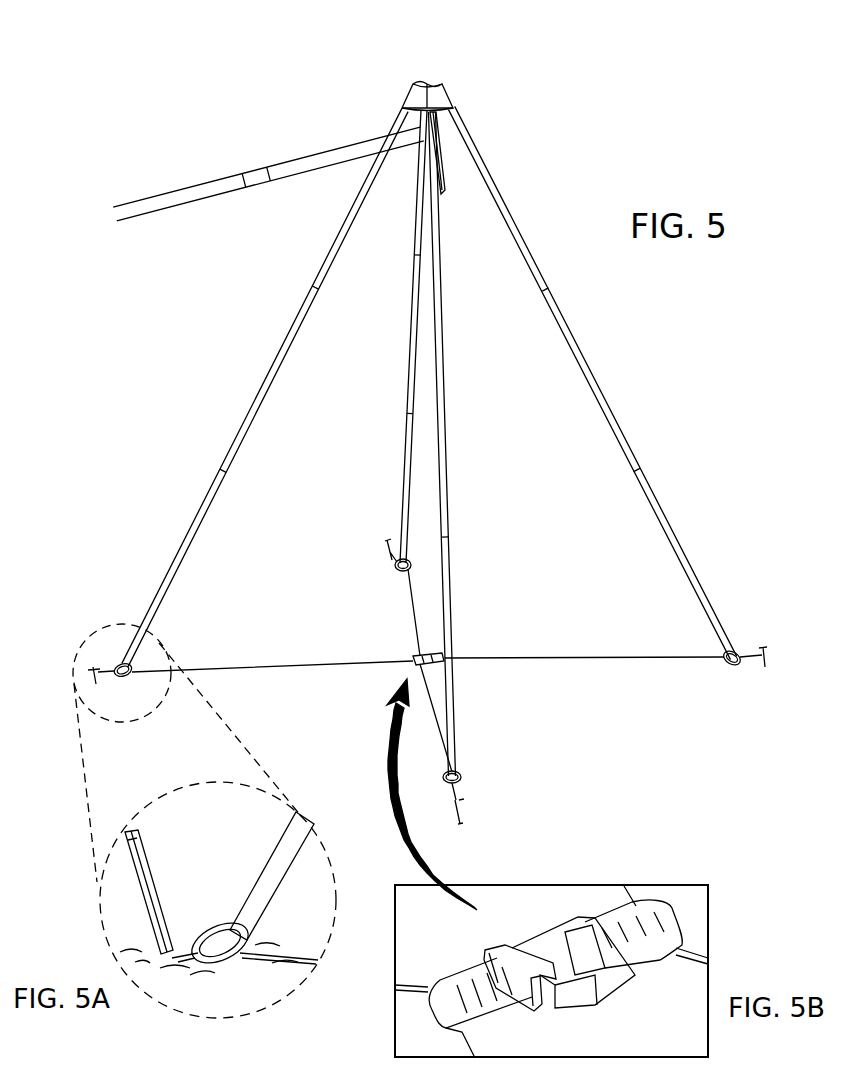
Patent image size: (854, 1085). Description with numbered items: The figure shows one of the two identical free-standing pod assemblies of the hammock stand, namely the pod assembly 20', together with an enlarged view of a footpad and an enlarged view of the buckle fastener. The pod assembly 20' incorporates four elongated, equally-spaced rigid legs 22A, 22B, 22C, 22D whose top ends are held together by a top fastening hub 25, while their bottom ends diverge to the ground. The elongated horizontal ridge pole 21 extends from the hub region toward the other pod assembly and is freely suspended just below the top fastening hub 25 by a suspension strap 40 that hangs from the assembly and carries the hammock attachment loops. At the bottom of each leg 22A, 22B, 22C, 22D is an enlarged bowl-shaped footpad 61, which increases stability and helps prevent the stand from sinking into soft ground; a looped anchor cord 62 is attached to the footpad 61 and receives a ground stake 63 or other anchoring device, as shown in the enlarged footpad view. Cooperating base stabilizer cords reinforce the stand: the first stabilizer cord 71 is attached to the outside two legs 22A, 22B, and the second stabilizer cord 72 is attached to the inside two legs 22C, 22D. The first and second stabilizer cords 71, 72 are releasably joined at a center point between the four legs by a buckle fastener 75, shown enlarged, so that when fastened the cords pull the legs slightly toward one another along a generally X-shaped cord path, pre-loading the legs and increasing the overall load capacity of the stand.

In FIG. 5, the pod assembly 20' is at (533, 80).
In FIG. 5, the ridge pole 21 is at (243, 188).
In FIG. 5, the leg 22A is at (247, 407).
In FIG. 5, the leg 22B is at (447, 462).
In FIG. 5, the leg 22C is at (410, 363).
In FIG. 5, the leg 22D is at (561, 290).
In FIG. 5, the top fastening hub 25 is at (412, 97).
In FIG. 5, the suspension strap 40 is at (443, 180).
In FIG. 5A, the footpad 61 is at (213, 914).
In FIG. 5A, the anchor cord 62 is at (182, 963).
In FIG. 5A, the ground stake 63 is at (143, 862).
In FIG. 5, the first stabilizer cord 71 is at (293, 667).
In FIG. 5B, the first stabilizer cord 71 is at (410, 980).
In FIG. 5, the second stabilizer cord 72 is at (597, 660).
In FIG. 5B, the second stabilizer cord 72 is at (685, 962).
In FIG. 5, the buckle fastener 75 is at (416, 655).
In FIG. 5B, the buckle fastener 75 is at (538, 948).